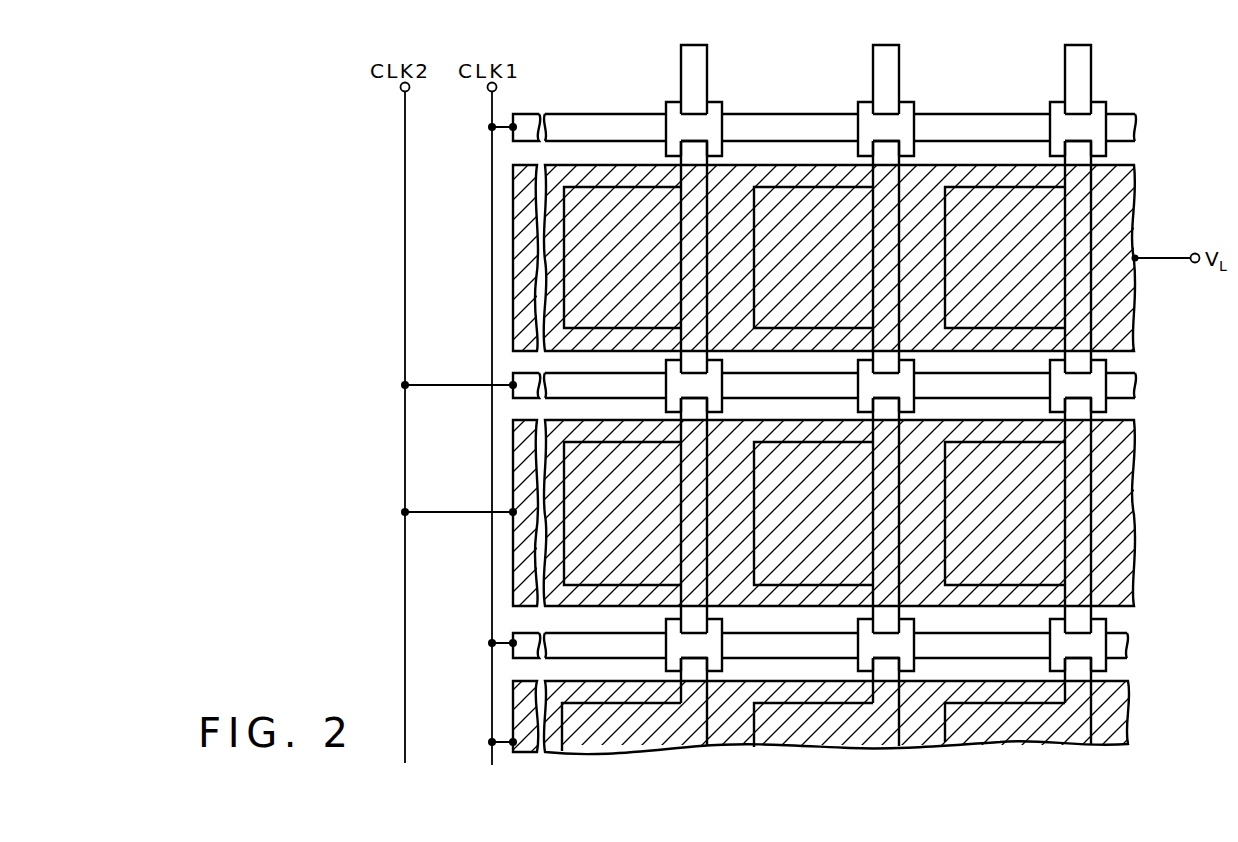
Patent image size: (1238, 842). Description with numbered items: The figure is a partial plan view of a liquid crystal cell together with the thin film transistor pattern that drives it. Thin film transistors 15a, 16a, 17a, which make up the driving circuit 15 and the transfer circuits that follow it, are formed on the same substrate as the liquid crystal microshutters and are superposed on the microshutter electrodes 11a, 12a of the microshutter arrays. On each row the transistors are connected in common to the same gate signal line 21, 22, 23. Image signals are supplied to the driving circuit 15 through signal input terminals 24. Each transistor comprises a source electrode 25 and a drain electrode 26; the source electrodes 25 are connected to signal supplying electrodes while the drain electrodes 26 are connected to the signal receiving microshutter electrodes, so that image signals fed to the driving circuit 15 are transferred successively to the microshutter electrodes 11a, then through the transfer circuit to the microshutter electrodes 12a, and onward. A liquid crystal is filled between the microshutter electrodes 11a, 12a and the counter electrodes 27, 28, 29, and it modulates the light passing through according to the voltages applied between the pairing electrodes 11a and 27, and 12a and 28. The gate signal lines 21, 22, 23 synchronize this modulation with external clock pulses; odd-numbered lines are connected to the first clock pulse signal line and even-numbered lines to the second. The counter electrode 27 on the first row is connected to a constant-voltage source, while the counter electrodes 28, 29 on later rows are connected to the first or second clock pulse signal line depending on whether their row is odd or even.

The microshutter electrode 11a is at (814, 257).
The microshutter electrode 12a is at (814, 513).
The driving circuit 15 is at (705, 625).
The TFT 15a is at (710, 123).
The TFT 16a is at (684, 388).
The TFT 17a is at (684, 644).
The gate signal line 21 is at (1138, 127).
The gate signal line 22 is at (1138, 383).
The gate signal line 23 is at (1129, 645).
The signal input terminal 24 is at (698, 104).
The source electrode 25 is at (700, 368).
The drain electrode 26 is at (703, 148).
The counter electrode 27 is at (1128, 196).
The counter electrode 28 is at (1129, 462).
The counter electrode 29 is at (1126, 708).